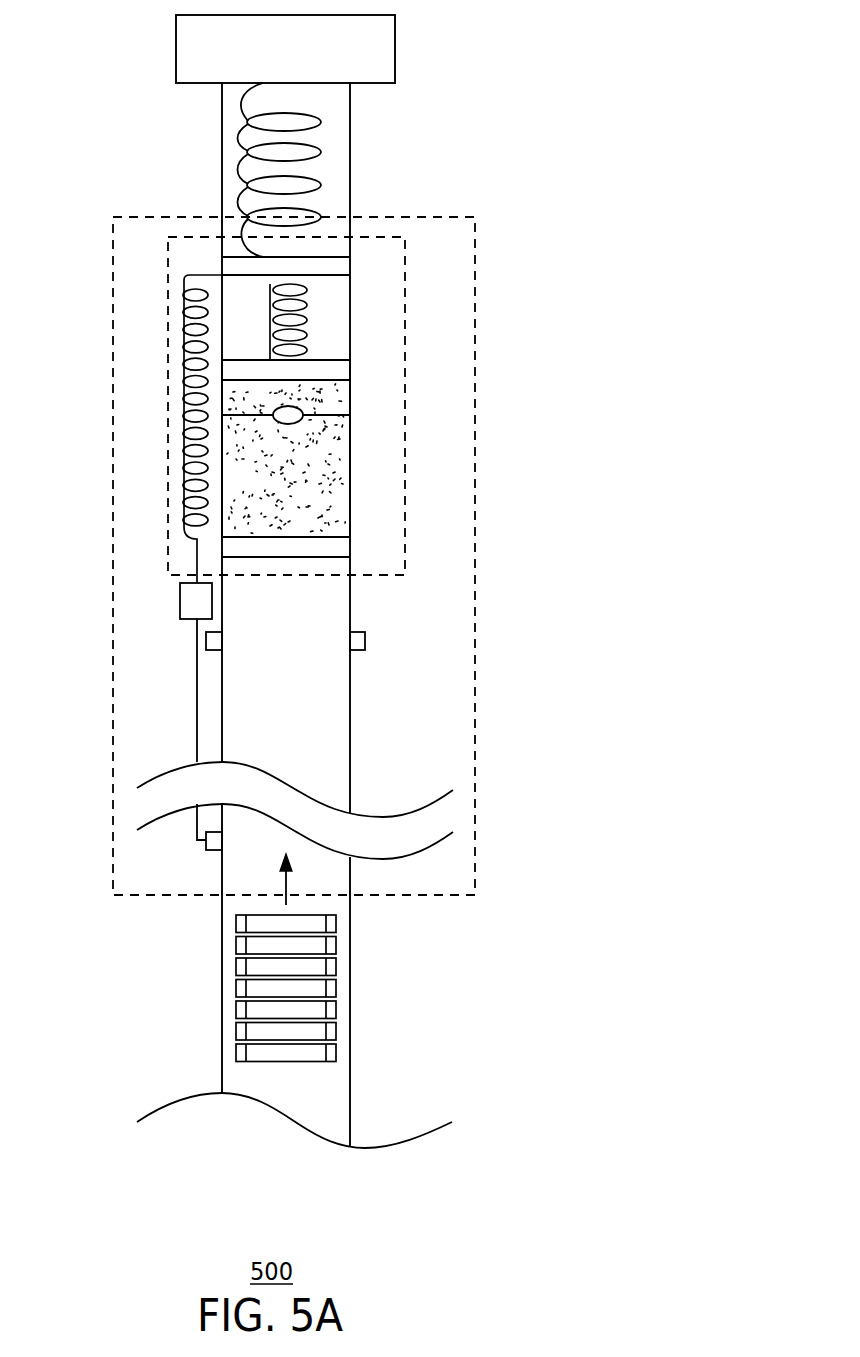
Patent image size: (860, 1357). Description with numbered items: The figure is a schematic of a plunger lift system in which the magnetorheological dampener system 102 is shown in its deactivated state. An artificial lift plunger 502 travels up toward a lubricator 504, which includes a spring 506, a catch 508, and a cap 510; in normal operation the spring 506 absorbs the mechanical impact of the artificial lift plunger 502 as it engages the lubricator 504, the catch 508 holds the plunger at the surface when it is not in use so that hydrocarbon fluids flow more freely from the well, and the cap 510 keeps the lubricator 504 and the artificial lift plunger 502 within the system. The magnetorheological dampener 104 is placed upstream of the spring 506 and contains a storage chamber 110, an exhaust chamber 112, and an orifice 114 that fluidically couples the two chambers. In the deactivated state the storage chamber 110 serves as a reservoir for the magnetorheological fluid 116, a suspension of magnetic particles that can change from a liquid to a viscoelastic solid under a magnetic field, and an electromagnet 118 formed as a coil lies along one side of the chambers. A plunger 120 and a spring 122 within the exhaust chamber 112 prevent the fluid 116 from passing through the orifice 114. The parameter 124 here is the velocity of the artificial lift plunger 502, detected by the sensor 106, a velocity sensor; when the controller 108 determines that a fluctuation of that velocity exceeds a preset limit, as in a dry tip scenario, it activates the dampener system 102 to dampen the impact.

The magnetorheological dampener system 102 is at (113, 662).
The magnetorheological dampener 104 is at (168, 415).
The sensor 106 is at (213, 851).
The controller 108 is at (180, 603).
The storage chamber 110 is at (353, 505).
The exhaust chamber 112 is at (350, 403).
The orifice 114 is at (301, 421).
The magnetorheological fluid 116 is at (323, 463).
The electromagnet 118 is at (183, 480).
The plunger 120 is at (350, 367).
The spring 122 is at (305, 318).
The parameter 124 is at (290, 880).
The artificial lift plunger 502 is at (238, 992).
The lubricator 504 is at (222, 135).
The spring 506 is at (318, 152).
The catch 508 is at (365, 642).
The cap 510 is at (395, 42).